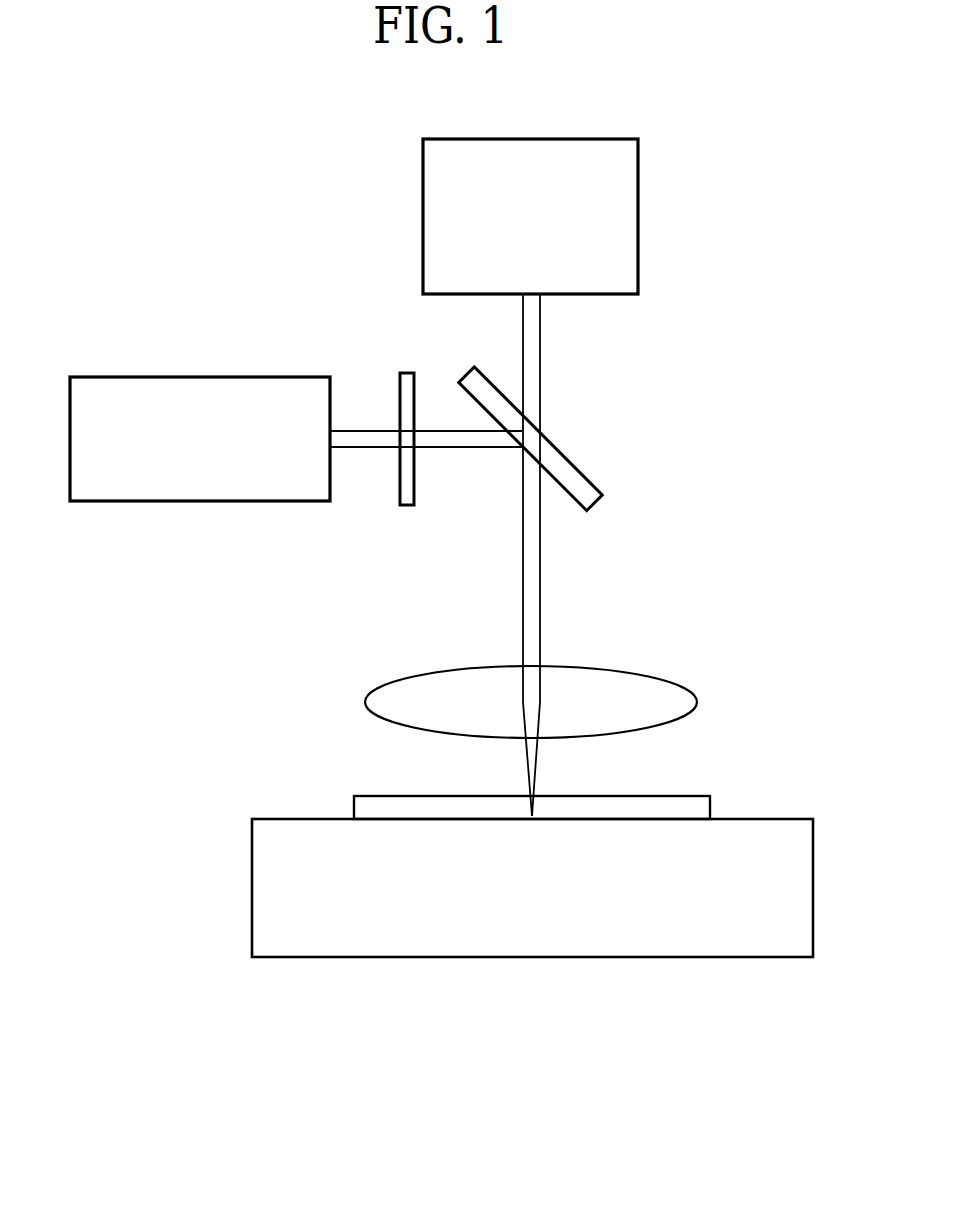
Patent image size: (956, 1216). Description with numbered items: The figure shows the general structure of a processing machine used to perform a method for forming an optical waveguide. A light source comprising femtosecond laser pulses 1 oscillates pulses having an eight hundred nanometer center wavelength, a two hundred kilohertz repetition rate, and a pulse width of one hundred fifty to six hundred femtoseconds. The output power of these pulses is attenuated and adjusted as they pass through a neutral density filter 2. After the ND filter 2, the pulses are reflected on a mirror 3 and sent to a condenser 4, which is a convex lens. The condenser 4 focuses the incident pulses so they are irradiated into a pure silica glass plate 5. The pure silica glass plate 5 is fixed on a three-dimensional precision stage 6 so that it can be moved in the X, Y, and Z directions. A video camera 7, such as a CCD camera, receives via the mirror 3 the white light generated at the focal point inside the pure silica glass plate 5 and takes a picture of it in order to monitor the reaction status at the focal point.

The light source comprising femtosecond laser pulses 1 is at (200, 383).
The neutral density filter 2 is at (409, 505).
The mirror 3 is at (575, 473).
The condenser 4 is at (692, 701).
The pure silica glass plate 5 is at (360, 808).
The three-dimensional precision stage 6 is at (533, 948).
The video camera 7 is at (632, 217).